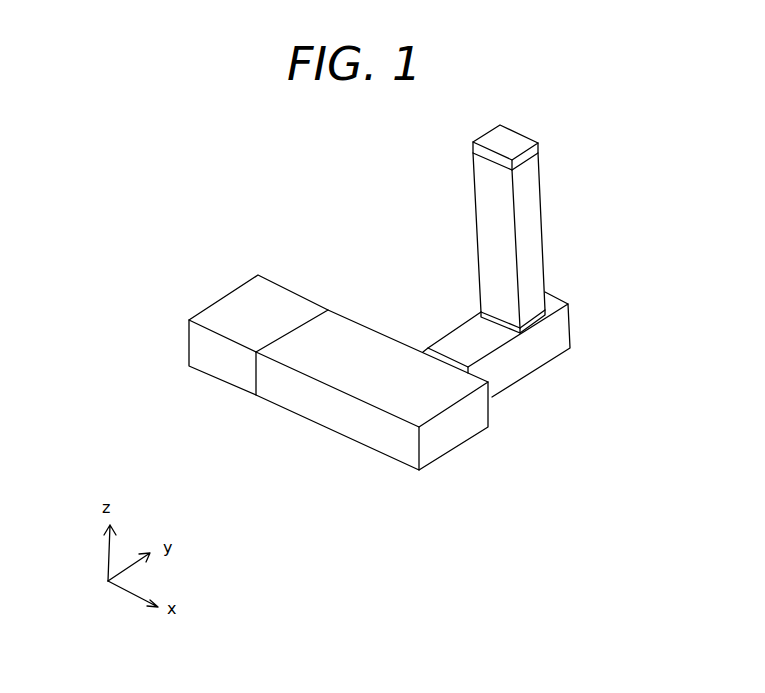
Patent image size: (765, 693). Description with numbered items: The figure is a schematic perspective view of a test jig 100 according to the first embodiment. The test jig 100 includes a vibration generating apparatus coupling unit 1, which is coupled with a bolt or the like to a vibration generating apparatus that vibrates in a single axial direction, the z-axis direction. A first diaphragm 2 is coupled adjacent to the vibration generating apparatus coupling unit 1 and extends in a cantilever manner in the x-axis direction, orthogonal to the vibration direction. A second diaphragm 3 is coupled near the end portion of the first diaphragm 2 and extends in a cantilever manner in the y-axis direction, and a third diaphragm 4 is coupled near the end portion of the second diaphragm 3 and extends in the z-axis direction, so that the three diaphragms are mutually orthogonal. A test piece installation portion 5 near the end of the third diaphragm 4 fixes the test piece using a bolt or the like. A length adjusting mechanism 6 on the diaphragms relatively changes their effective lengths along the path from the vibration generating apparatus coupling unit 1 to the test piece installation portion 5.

The test jig 100 is at (338, 203).
The vibration generating apparatus coupling unit 1 is at (223, 362).
The first diaphragm 2 is at (317, 407).
The second diaphragm 3 is at (522, 363).
The third diaphragm 4 is at (535, 227).
The test piece installation portion 5 is at (527, 153).
The length adjusting mechanism 6 is at (431, 349).